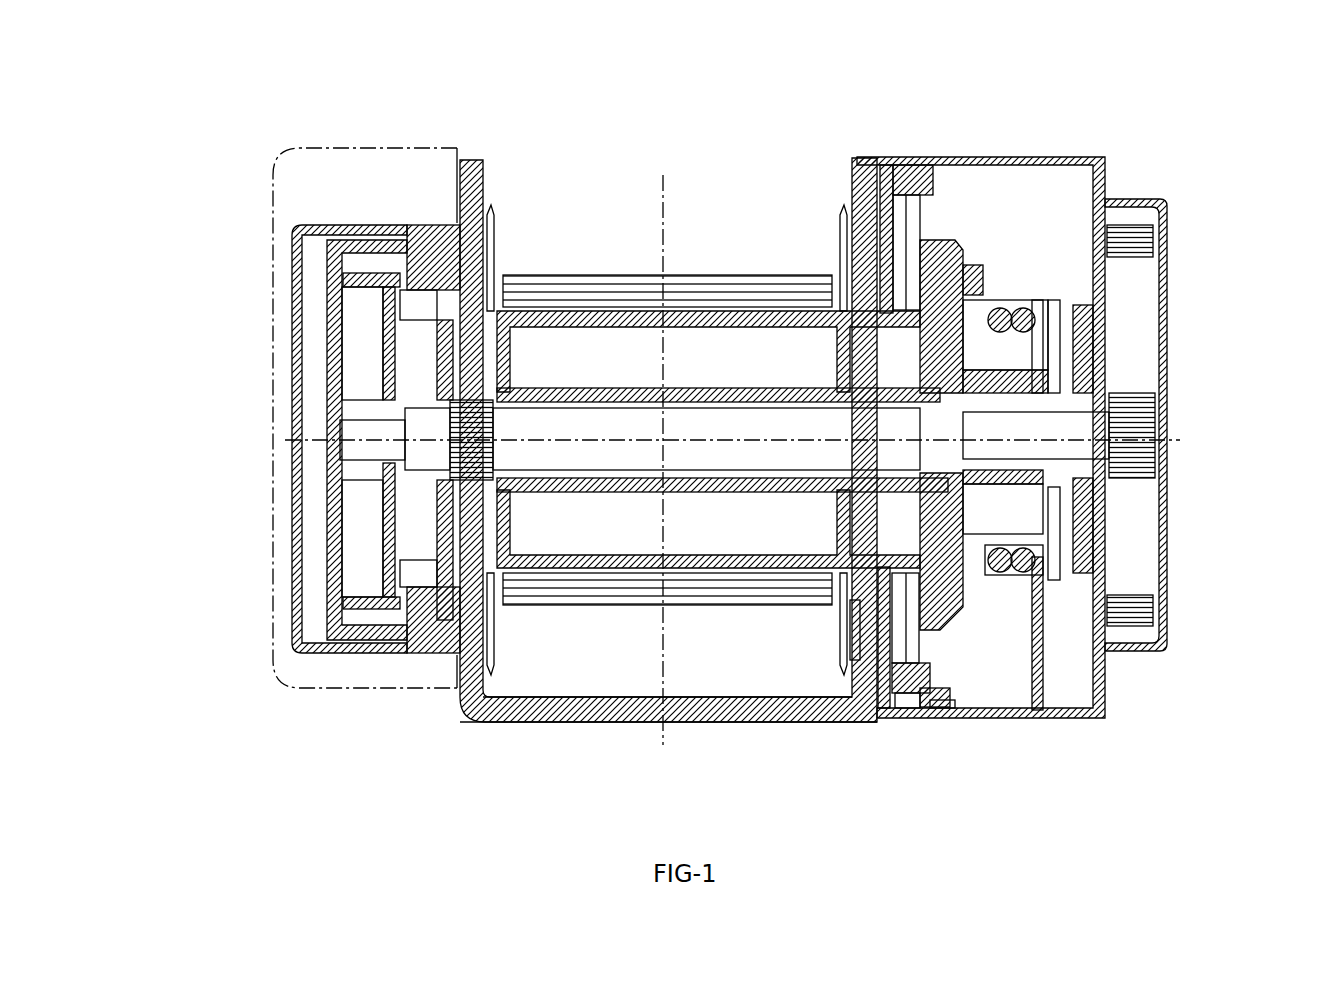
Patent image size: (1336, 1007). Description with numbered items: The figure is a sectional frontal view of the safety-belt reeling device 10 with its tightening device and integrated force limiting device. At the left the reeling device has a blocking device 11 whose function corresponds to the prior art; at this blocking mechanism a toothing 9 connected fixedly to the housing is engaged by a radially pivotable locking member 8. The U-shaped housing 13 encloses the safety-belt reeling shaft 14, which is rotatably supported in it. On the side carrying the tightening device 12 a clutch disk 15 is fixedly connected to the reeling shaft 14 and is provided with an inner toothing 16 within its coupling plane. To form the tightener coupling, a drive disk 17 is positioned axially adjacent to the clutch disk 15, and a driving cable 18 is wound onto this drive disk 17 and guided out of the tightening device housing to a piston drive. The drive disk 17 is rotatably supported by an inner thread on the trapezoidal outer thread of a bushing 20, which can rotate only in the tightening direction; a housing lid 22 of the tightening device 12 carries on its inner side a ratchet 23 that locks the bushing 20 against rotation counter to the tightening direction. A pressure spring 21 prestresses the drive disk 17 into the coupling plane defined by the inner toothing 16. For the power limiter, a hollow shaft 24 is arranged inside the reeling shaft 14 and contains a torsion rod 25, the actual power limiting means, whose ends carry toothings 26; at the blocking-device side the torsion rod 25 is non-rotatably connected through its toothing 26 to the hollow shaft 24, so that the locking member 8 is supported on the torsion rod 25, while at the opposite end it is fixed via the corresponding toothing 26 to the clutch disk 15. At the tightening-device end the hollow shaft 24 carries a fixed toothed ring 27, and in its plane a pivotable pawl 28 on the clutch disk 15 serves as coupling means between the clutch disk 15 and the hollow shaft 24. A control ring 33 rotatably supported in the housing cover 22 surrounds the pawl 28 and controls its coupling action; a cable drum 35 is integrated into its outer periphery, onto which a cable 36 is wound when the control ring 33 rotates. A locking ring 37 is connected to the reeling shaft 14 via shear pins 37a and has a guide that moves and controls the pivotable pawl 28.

The locking member 8 is at (400, 328).
The toothing 9 is at (403, 650).
The safety-belt reeling device 10 is at (630, 429).
The blocking device 11 is at (310, 182).
The tightening device 12 is at (1206, 379).
The U-shaped housing 13 is at (575, 722).
The safety-belt reeling shaft 14 is at (582, 315).
The clutch disk 15 is at (850, 210).
The inner toothing 16 is at (882, 158).
The drive disk 17 is at (1040, 647).
The driving cable 18 is at (1040, 558).
The bushing 20 is at (1000, 353).
The pressure spring 21 is at (1050, 387).
The housing lid 22 is at (1015, 158).
The ratchet 23 is at (1107, 269).
The hollow shaft 24 is at (563, 497).
The torsion rod 25 is at (737, 455).
The toothing 26 is at (448, 462).
The toothed ring 27 is at (828, 278).
The pivotable pawl 28 is at (902, 615).
The control ring 33 is at (963, 717).
The cable drum 35 is at (933, 717).
The cable 36 is at (907, 710).
The locking ring 37 is at (843, 665).
The shear pins 37a is at (868, 640).